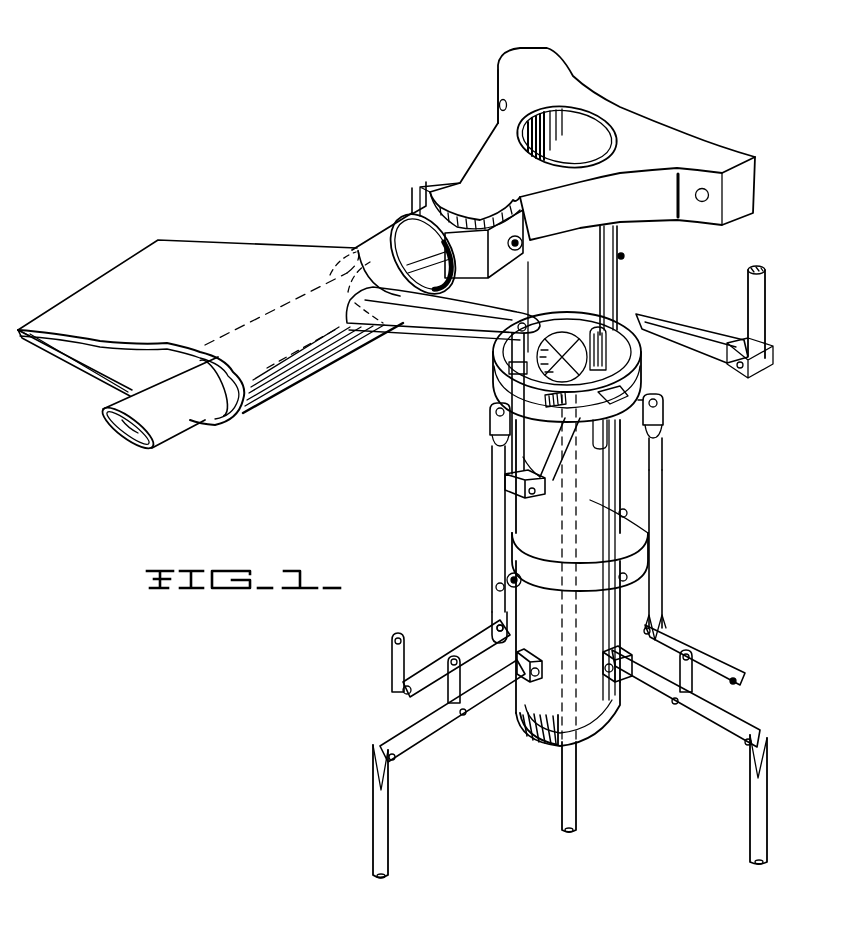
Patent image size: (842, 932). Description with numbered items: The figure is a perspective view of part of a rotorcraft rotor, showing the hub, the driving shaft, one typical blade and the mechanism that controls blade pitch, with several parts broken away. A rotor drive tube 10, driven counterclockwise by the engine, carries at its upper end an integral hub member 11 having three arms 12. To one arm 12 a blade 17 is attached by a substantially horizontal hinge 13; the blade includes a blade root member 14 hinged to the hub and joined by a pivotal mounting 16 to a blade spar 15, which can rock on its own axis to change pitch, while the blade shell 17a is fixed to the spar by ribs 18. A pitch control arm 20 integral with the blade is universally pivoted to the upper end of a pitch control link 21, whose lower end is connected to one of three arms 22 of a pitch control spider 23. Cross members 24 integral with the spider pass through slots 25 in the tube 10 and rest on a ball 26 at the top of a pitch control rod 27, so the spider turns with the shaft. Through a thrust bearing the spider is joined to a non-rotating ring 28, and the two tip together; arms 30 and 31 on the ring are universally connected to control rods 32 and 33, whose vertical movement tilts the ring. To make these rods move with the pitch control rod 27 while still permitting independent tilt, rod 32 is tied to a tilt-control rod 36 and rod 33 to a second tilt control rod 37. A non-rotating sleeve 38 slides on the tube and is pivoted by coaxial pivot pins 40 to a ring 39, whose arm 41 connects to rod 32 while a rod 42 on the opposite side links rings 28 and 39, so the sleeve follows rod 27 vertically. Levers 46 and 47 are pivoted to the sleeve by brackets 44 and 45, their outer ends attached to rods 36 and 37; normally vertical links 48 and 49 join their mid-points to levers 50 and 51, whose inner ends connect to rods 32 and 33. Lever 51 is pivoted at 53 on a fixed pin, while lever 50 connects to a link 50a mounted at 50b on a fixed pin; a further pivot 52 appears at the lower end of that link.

The rotor drive tube 10 is at (624, 256).
The hub member 11 is at (650, 124).
The arm 12 is at (516, 58).
The hinge 13 is at (522, 242).
The blade root member 14 is at (411, 196).
The blade spar 15 is at (186, 404).
The pivotal mounting 16 is at (392, 238).
The blade 17 is at (270, 411).
The blade shell 17a is at (50, 352).
The ribs 18 is at (110, 360).
The pitch control arm 20 is at (440, 322).
The pitch control link 21 is at (765, 310).
The arm 22 is at (690, 328).
The pitch control spider 23 is at (612, 326).
The cross members 24 is at (563, 330).
The slots 25 is at (581, 440).
The ball 26 is at (622, 394).
The pitch control rod 27 is at (578, 792).
The non-rotating ring 28 is at (500, 392).
The arm 30 is at (490, 406).
The arm 31 is at (660, 396).
The control rod 32 is at (492, 513).
The control rod 33 is at (662, 494).
The tilt-control rod 36 is at (389, 832).
The second tilt control rod 37 is at (750, 808).
The sleeve 38 is at (582, 735).
The ring 39 is at (545, 590).
The pivot pins 40 is at (596, 558).
The arm 41 is at (496, 580).
The rod 42 is at (638, 462).
The bracket 44 is at (525, 684).
The bracket 45 is at (618, 706).
The lever 46 is at (428, 735).
The lever 47 is at (722, 732).
The link 48 is at (460, 672).
The link 49 is at (700, 676).
The lever 50 is at (472, 646).
The link 50a is at (390, 664).
The pivotal mounting 50b is at (395, 641).
The lever 51 is at (672, 642).
The pin 52 is at (405, 694).
The pivotal mounting 53 is at (735, 685).